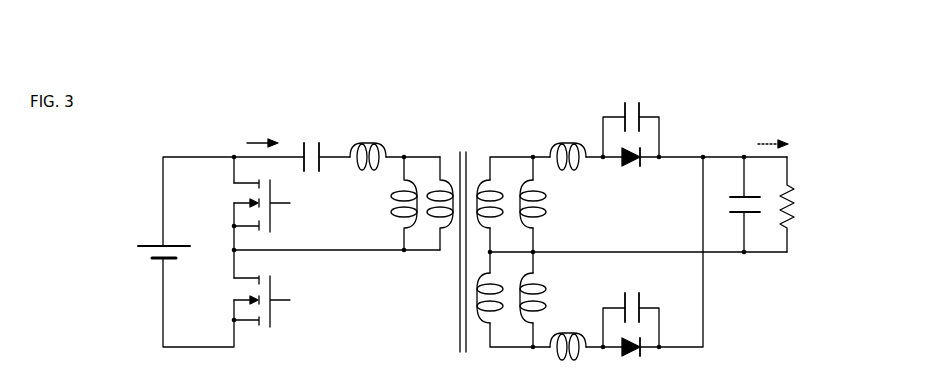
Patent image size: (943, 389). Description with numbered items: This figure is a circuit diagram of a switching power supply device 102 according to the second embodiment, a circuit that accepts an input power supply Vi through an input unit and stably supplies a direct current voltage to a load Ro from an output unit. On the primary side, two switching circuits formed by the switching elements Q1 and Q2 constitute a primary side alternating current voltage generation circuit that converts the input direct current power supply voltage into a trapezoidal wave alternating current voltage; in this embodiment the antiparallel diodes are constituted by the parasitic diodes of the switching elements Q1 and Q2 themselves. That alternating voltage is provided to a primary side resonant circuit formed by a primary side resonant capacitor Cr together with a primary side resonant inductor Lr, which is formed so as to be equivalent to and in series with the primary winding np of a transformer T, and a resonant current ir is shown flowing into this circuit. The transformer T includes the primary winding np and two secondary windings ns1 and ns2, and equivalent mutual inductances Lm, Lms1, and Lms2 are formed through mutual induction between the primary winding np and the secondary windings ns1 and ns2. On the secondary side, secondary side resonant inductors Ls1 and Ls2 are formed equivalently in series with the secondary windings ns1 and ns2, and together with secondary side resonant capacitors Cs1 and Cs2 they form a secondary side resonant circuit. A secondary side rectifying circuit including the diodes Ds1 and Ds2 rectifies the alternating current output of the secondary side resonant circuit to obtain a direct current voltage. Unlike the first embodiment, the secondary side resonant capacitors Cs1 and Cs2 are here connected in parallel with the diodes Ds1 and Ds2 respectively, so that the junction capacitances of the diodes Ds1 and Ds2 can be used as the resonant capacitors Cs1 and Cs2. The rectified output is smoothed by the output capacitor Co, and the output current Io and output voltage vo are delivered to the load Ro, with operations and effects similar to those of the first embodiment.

The switching power supply device 102 is at (835, 82).
The input power supply Vi is at (159, 234).
The switching element Q1 is at (274, 301).
The switching element Q2 is at (274, 206).
The resonant current ir is at (262, 129).
The primary side resonant capacitor Cr is at (310, 144).
The primary side resonant inductor Lr is at (368, 143).
The equivalent mutual inductance Lm is at (387, 203).
The primary winding np is at (433, 190).
The transformer T is at (462, 239).
The secondary winding ns1 is at (495, 180).
The equivalent mutual inductance Lms1 is at (549, 204).
The secondary side resonant inductor Ls1 is at (568, 144).
The secondary side resonant capacitor Cs1 is at (631, 118).
The diode Ds1 is at (628, 169).
The secondary winding ns2 is at (495, 327).
The equivalent mutual inductance Lms2 is at (549, 298).
The secondary side resonant inductor Ls2 is at (568, 361).
The secondary side resonant capacitor Cs2 is at (631, 308).
The diode Ds2 is at (628, 362).
The output capacitor Co is at (736, 204).
The load Ro is at (774, 204).
The output current Io is at (773, 134).
The output voltage vo is at (819, 207).